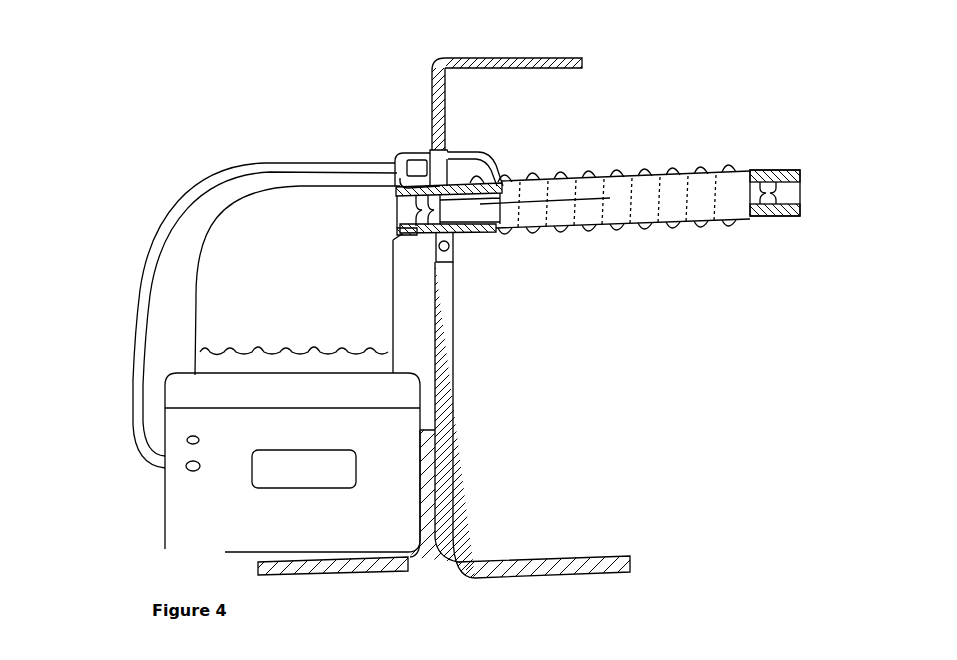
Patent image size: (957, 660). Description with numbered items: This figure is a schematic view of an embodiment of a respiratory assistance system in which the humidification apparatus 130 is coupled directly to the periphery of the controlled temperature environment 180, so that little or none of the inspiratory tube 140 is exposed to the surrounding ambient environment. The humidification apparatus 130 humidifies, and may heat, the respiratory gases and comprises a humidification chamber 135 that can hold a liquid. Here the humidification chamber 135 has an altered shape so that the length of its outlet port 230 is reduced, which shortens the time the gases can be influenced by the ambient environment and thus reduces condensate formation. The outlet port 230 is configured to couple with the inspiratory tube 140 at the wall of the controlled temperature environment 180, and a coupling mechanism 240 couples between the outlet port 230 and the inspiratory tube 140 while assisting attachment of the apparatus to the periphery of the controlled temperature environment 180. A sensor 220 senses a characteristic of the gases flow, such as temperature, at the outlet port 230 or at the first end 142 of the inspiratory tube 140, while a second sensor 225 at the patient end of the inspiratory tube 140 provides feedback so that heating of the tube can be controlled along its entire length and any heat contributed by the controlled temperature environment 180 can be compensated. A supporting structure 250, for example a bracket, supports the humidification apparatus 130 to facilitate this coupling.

The humidification apparatus 130 is at (200, 537).
The humidification chamber 135 is at (207, 338).
The inspiratory tube 140 is at (625, 186).
The first end of the inspiratory tube 142 is at (416, 190).
The controlled temperature environment 180 is at (565, 63).
The sensor 220 is at (440, 212).
The second sensor 225 is at (764, 196).
The outlet port 230 is at (396, 190).
The coupling mechanism 240 is at (438, 148).
The supporting structure 250 is at (405, 562).